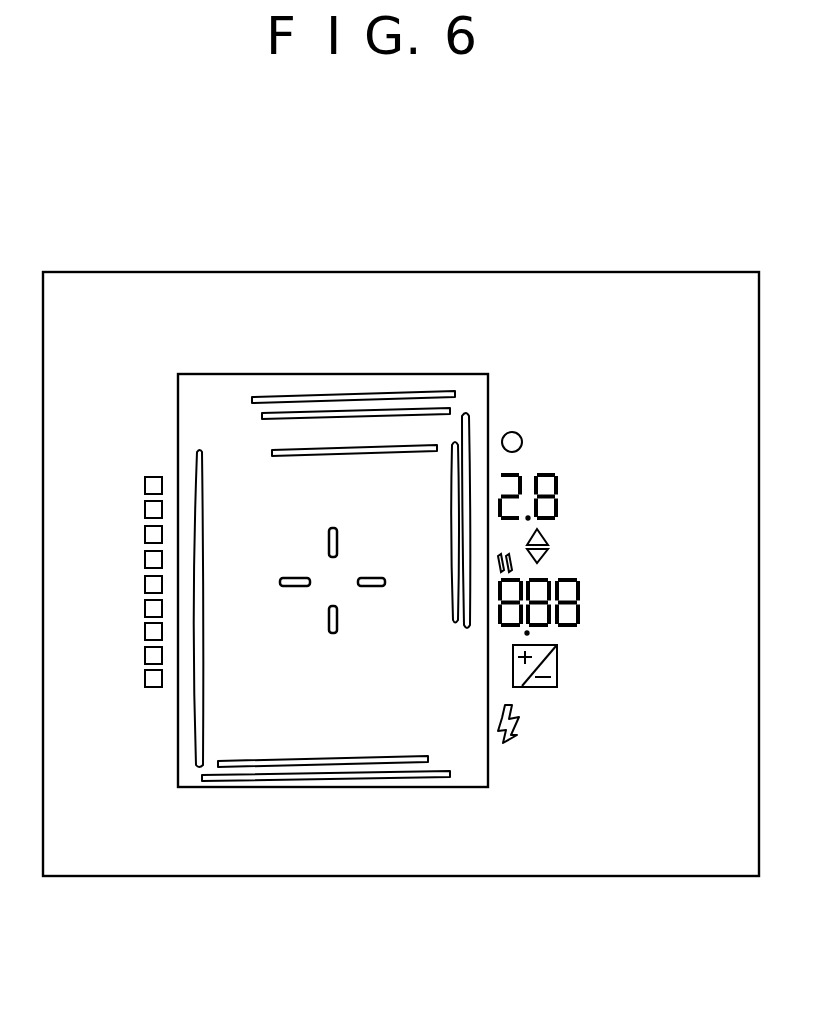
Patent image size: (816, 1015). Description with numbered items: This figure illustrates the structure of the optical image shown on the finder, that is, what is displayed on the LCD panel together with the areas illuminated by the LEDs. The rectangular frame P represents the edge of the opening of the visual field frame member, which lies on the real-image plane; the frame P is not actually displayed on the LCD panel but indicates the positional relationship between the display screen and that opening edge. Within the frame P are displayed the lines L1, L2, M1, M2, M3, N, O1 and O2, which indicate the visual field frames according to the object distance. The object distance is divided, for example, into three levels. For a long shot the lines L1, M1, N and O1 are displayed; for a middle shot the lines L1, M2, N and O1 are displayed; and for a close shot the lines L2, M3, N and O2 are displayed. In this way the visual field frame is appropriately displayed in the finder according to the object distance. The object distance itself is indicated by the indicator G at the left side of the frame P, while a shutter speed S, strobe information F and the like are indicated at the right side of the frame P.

The frame P is at (488, 787).
The visual field frame line M1 is at (288, 393).
The visual field frame line M2 is at (377, 411).
The visual field frame line M3 is at (408, 448).
The visual field frame line L1 is at (467, 430).
The visual field frame line L2 is at (456, 440).
The visual field frame line N is at (195, 473).
The indicator G is at (140, 578).
The visual field frame line O1 is at (223, 781).
The visual field frame line O2 is at (330, 767).
The shutter speed S is at (563, 503).
The strobe information F is at (521, 731).